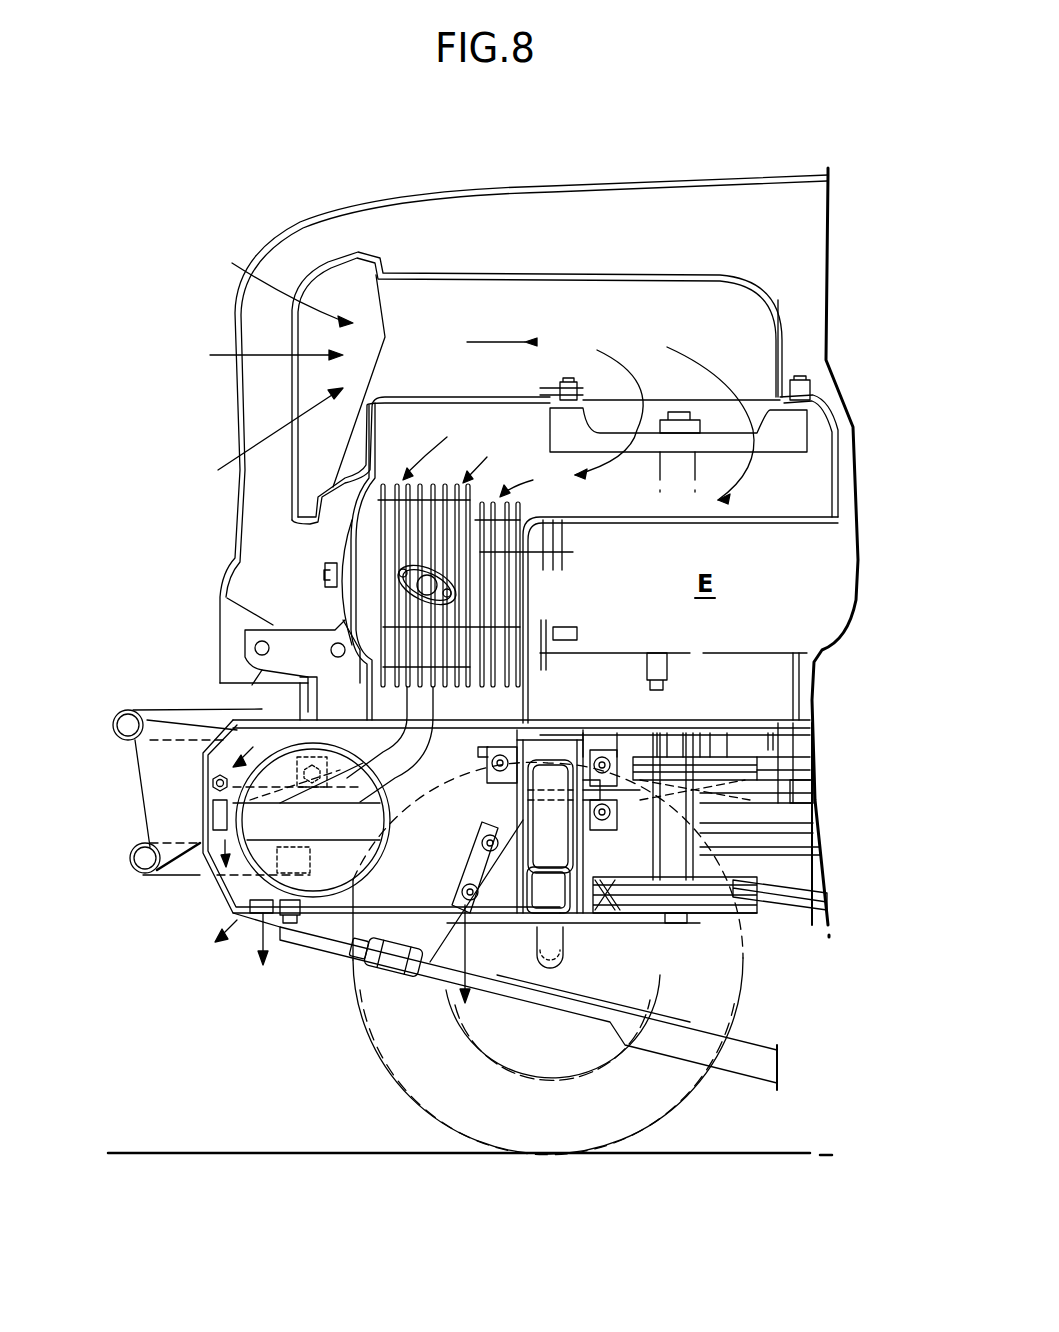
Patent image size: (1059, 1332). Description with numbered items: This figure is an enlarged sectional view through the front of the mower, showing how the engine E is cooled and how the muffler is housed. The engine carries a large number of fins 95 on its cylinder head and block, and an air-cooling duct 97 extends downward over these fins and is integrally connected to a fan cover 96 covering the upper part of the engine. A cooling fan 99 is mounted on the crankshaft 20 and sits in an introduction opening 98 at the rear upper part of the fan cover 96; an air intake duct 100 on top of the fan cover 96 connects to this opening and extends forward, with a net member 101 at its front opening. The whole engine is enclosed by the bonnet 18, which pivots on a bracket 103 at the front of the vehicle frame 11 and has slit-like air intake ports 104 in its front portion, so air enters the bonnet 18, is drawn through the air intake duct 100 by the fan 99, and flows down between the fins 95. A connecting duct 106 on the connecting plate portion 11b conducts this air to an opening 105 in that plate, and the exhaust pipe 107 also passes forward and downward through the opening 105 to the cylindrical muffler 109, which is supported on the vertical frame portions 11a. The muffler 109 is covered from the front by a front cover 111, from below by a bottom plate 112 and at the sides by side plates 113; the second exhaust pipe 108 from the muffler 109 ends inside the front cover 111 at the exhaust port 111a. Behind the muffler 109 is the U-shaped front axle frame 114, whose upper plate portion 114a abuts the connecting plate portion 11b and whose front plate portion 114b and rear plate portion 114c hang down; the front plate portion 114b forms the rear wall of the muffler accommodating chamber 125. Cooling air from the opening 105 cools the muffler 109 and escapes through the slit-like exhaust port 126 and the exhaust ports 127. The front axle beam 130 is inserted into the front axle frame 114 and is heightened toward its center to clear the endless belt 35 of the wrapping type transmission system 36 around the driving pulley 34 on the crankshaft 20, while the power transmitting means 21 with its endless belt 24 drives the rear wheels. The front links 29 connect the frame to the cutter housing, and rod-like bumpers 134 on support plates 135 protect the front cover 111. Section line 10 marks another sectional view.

The bonnet 18 is at (630, 178).
The air intake duct 100 is at (680, 275).
The introduction opening 98 is at (757, 410).
The fan cover 96 is at (840, 427).
The air intake ports 104 is at (232, 313).
The net member 101 is at (295, 393).
The air-cooling duct 97 is at (355, 540).
The bracket 103 is at (295, 640).
The fins 95 is at (540, 583).
The connecting duct 106 is at (540, 655).
The crankshaft 20 is at (673, 463).
The cooling fan 99 is at (785, 450).
The vertical frame portions 11a is at (797, 653).
The exhaust pipe 107 is at (430, 707).
The section line 10 is at (588, 700).
The upper plate portion 114a is at (580, 723).
The connecting plate portion 11b is at (690, 723).
The rear wheel power transmitting endless belt 24 is at (773, 723).
The opening 105 is at (445, 730).
The front axle frame 114 is at (586, 855).
The front plate portion 114b is at (455, 740).
The muffler accommodating chamber 125 is at (430, 897).
The rear plate portion 114c is at (520, 830).
The vehicle frame 11 is at (767, 737).
The power transmitting means 21 is at (797, 787).
The wrapping type transmission system 36 is at (803, 893).
The endless belt 35 is at (780, 913).
The driving pulley 34 is at (697, 923).
The front axle beam 130 is at (583, 927).
The front links 29 is at (667, 1047).
The exhaust port 126 is at (460, 960).
The bottom plate 112 is at (347, 917).
The muffler 109 is at (313, 913).
The exhaust ports 127 is at (233, 913).
The side plates 113 is at (217, 857).
The bumpers 134 is at (155, 713).
The exhaust pipe 108 is at (203, 803).
The support plates 135 is at (150, 794).
The exhaust port 111a is at (203, 818).
The front cover 111 is at (203, 782).